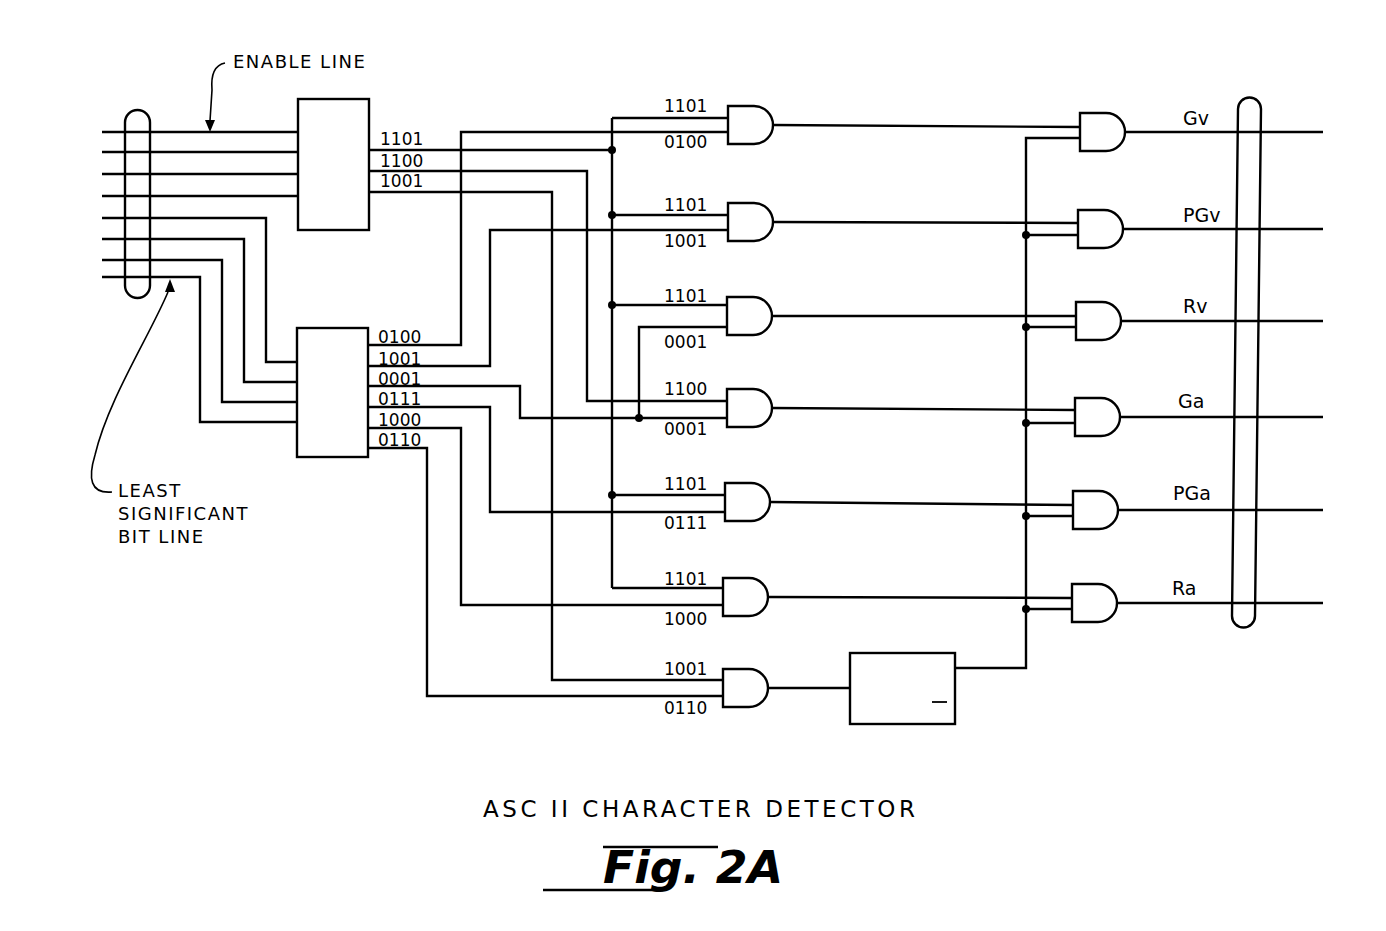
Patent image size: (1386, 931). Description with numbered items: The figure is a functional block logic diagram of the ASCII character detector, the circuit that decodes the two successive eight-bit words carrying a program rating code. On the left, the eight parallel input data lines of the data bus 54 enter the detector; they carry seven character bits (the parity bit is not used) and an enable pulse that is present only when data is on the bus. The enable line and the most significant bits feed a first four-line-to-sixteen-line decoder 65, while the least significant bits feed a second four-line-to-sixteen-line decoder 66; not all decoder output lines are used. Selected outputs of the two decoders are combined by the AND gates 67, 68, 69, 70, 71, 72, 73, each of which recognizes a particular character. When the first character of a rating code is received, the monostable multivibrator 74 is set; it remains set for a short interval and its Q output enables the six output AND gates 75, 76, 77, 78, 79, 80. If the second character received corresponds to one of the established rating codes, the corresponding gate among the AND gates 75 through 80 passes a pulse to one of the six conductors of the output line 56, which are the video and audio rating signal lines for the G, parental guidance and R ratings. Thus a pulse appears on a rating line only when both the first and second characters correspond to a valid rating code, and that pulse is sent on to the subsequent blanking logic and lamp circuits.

The eight-line parallel data bus 54 is at (138, 108).
The output line 56 is at (1262, 115).
The 4-line-to-16-line decoder 65 is at (369, 107).
The 4-line-to-16-line decoder 66 is at (332, 458).
The AND gate 67 is at (757, 106).
The AND gate 68 is at (758, 203).
The AND gate 69 is at (758, 297).
The AND gate 70 is at (760, 389).
The AND gate 71 is at (757, 484).
The AND gate 72 is at (756, 579).
The AND gate 73 is at (760, 672).
The monostable multivibrator 74 is at (925, 724).
The output AND gate 75 is at (1112, 114).
The output AND gate 76 is at (1110, 211).
The output AND gate 77 is at (1108, 303).
The output AND gate 78 is at (1107, 399).
The output AND gate 79 is at (1105, 492).
The output AND gate 80 is at (1104, 585).